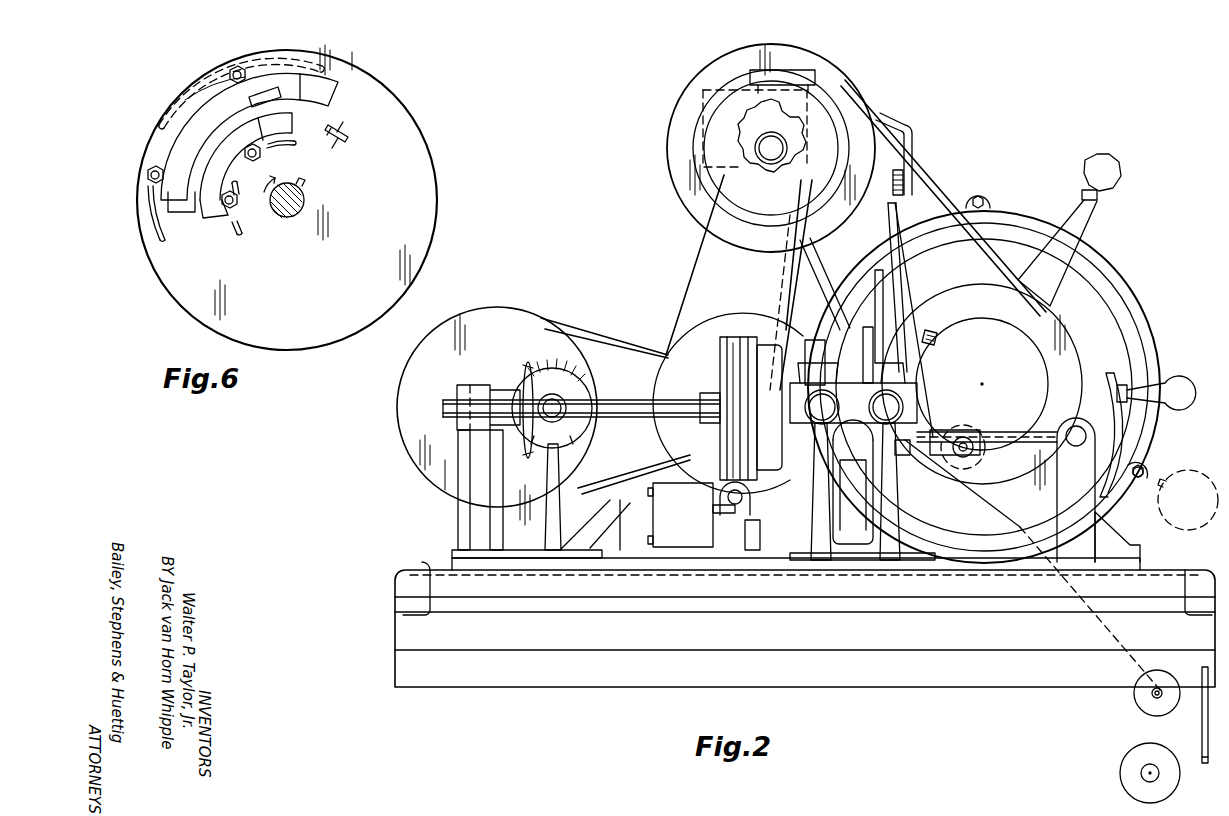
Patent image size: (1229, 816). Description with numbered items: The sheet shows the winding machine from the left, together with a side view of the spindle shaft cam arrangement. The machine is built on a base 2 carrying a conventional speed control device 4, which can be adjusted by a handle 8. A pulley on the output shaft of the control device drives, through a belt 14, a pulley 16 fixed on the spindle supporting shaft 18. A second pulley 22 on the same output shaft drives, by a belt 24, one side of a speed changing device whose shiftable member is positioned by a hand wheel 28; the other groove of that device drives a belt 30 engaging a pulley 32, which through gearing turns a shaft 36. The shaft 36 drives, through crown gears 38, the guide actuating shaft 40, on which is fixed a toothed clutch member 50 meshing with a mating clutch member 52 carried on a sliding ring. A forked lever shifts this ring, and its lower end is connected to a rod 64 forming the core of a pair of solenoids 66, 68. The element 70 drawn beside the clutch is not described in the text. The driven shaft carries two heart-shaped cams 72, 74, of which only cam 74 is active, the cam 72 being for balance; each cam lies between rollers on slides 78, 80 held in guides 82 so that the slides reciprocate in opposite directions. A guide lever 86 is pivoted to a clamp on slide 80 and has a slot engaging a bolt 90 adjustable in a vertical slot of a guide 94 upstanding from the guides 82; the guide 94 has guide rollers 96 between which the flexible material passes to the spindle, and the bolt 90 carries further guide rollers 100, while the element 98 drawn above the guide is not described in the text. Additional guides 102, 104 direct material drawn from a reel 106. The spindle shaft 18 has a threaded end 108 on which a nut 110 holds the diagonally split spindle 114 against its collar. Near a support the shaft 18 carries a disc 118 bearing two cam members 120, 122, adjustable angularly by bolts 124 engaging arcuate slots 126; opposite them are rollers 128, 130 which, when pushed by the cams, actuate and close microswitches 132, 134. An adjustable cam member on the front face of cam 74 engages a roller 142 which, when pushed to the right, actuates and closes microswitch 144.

In FIG. 2, the base 2 is at (733, 588).
In FIG. 2, the speed control device 4 is at (1118, 278).
In FIG. 2, the handle 8 is at (1112, 181).
In FIG. 2, the belt 14 is at (936, 186).
In FIG. 2, the pulley 16 is at (832, 86).
In FIG. 6, the spindle supporting shaft 18 is at (303, 202).
In FIG. 2, the second pulley 22 is at (1060, 358).
In FIG. 2, the belt 24 is at (850, 305).
In FIG. 2, the hand wheel 28 is at (1125, 437).
In FIG. 2, the belt 30 is at (586, 336).
In FIG. 2, the pulley 32 is at (481, 318).
In FIG. 2, the shaft 36 is at (563, 404).
In FIG. 2, the crown gears 38 is at (533, 372).
In FIG. 2, the guide actuating shaft 40 is at (622, 405).
In FIG. 2, the clutch member 50 is at (722, 360).
In FIG. 2, the clutch member 52 is at (736, 337).
In FIG. 2, the rod 64 is at (740, 513).
In FIG. 2, the solenoid 66 is at (691, 515).
In FIG. 2, the solenoid 68 is at (827, 543).
In FIG. 2, the pulley 70 is at (767, 345).
In FIG. 2, the heart-shaped cam 72 is at (818, 338).
In FIG. 2, the heart-shaped cam 74 is at (878, 372).
In FIG. 2, the slide 78 is at (822, 440).
In FIG. 2, the slide 80 is at (888, 407).
In FIG. 2, the guides 82 is at (853, 462).
In FIG. 2, the guide lever 86 is at (896, 270).
In FIG. 2, the bolt 90 is at (868, 332).
In FIG. 2, the guide 94 is at (880, 280).
In FIG. 2, the guide rollers 96 is at (883, 192).
In FIG. 2, the guide 98 is at (906, 126).
In FIG. 2, the guide rollers 100 is at (935, 340).
In FIG. 2, the guide 102 is at (977, 452).
In FIG. 2, the guide 104 is at (1148, 700).
In FIG. 2, the reel 106 is at (1120, 766).
In FIG. 2, the threaded end 108 is at (768, 145).
In FIG. 2, the nut 110 is at (742, 163).
In FIG. 2, the diagonally split spindle 114 is at (745, 195).
In FIG. 6, the disc 118 is at (412, 156).
In FIG. 2, the disc 118 is at (836, 112).
In FIG. 6, the cam member 120 is at (192, 141).
In FIG. 6, the cam member 122 is at (205, 220).
In FIG. 6, the bolts 124 is at (234, 214).
In FIG. 6, the arcuate slots 126 is at (243, 226).
In FIG. 6, the roller 128 is at (268, 95).
In FIG. 6, the roller 130 is at (348, 133).
In FIG. 2, the microswitch 132 is at (786, 80).
In FIG. 2, the microswitch 134 is at (760, 143).
In FIG. 2, the roller 142 is at (903, 452).
In FIG. 2, the microswitch 144 is at (930, 452).